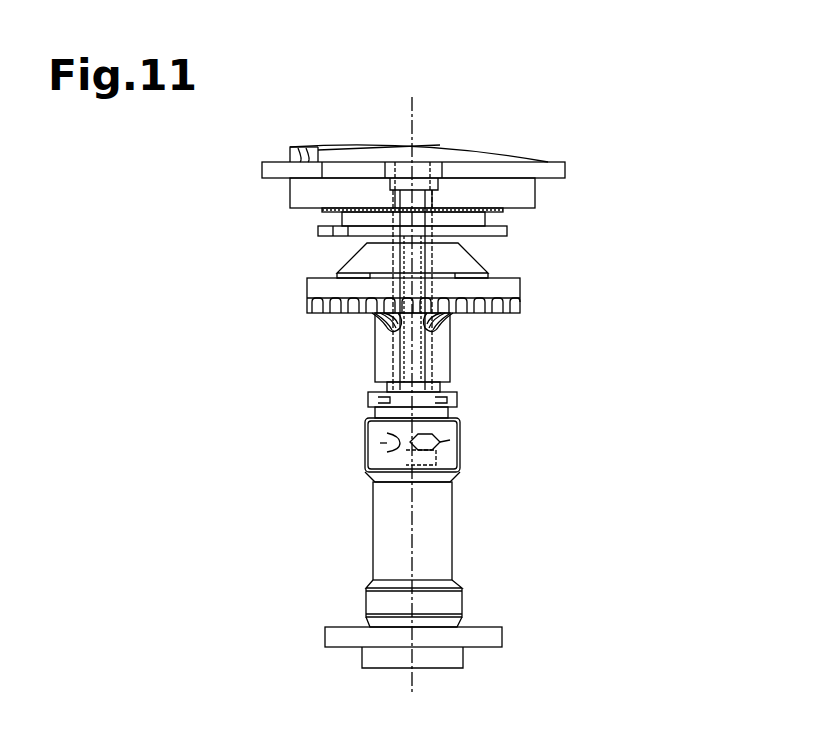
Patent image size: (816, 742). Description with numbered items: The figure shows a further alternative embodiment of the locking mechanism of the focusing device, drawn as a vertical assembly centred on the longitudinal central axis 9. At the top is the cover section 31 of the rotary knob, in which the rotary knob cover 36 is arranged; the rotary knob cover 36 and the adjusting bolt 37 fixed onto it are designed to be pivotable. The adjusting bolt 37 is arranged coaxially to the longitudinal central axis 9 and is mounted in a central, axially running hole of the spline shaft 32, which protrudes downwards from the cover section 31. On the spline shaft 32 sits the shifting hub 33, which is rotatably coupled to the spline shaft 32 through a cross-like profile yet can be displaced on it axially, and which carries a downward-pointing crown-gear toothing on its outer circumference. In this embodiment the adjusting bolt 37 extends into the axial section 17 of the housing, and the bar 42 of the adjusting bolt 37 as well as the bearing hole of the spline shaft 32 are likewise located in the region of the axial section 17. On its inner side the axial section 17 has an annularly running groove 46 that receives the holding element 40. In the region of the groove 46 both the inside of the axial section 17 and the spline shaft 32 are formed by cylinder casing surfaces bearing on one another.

The longitudinal central axis 9 is at (411, 111).
The axial section 17 is at (372, 548).
The cover section 31 is at (234, 138).
The spline shaft 32 is at (378, 385).
The shifting hub 33 is at (299, 295).
The rotary knob cover 36 is at (546, 190).
The adjusting bolt 37 is at (432, 360).
The holding element 40 is at (448, 437).
The bar 42 is at (404, 450).
The groove 46 is at (372, 443).